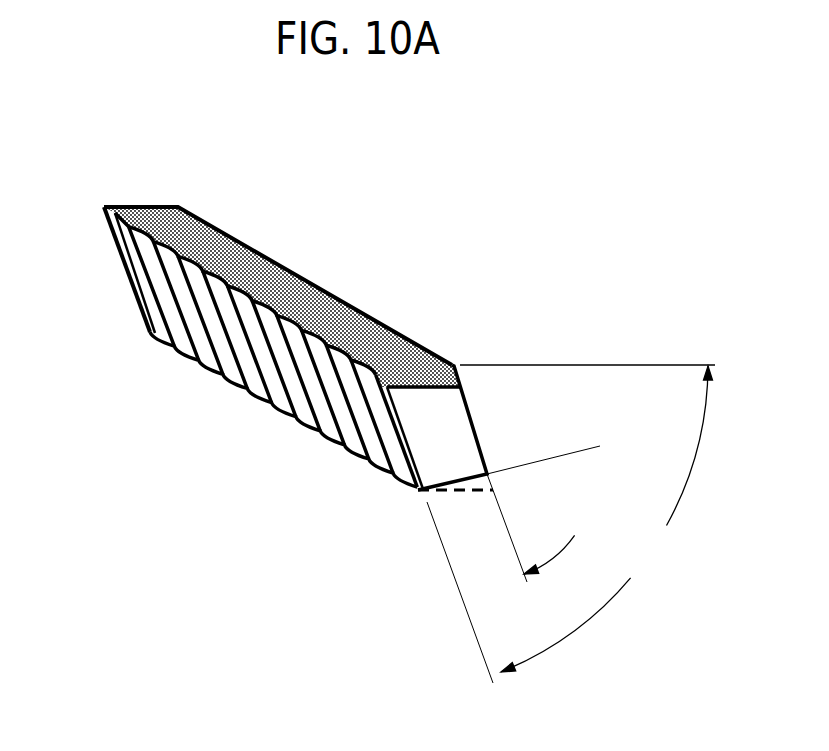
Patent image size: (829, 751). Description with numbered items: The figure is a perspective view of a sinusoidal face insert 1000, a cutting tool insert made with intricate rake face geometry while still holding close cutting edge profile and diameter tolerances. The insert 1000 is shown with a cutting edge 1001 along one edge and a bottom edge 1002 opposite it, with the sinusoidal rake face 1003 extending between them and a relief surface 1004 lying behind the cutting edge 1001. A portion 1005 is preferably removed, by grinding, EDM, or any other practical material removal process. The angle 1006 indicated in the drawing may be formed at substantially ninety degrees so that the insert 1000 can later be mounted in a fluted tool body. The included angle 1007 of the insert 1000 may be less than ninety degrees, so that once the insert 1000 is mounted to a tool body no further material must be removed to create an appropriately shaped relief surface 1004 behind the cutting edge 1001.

The sinusoidal face insert 1000 is at (100, 171).
The cutting edge 1001 is at (334, 333).
The bottom edge 1002 is at (322, 433).
The rake face 1003 is at (245, 348).
The relief surface 1004 is at (262, 273).
The removed portion 1005 is at (468, 491).
The angle 1006 is at (597, 443).
The included angle 1007 is at (571, 524).